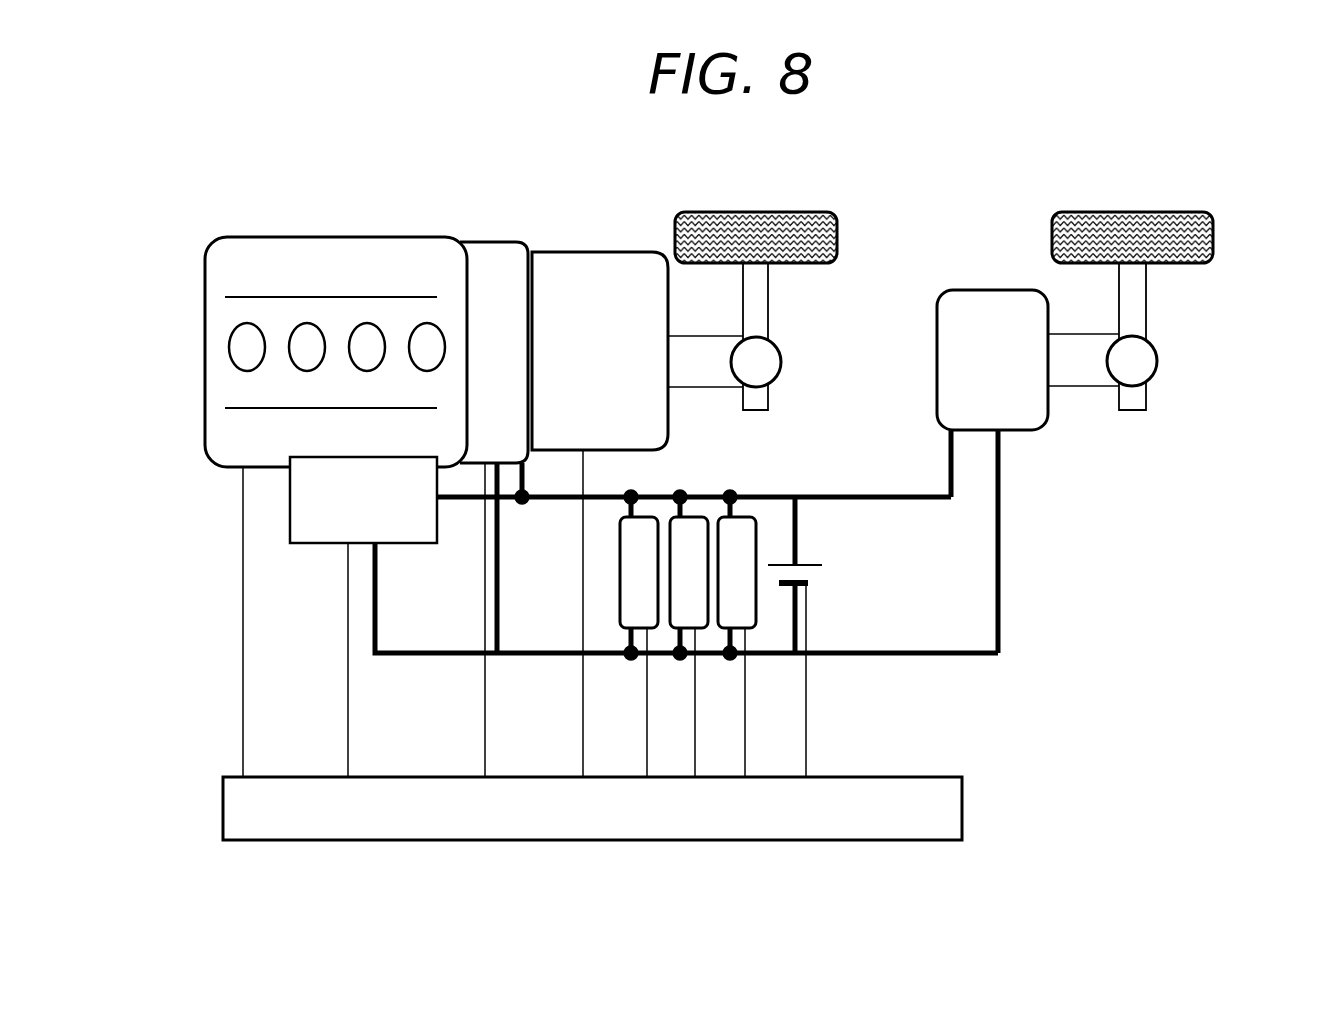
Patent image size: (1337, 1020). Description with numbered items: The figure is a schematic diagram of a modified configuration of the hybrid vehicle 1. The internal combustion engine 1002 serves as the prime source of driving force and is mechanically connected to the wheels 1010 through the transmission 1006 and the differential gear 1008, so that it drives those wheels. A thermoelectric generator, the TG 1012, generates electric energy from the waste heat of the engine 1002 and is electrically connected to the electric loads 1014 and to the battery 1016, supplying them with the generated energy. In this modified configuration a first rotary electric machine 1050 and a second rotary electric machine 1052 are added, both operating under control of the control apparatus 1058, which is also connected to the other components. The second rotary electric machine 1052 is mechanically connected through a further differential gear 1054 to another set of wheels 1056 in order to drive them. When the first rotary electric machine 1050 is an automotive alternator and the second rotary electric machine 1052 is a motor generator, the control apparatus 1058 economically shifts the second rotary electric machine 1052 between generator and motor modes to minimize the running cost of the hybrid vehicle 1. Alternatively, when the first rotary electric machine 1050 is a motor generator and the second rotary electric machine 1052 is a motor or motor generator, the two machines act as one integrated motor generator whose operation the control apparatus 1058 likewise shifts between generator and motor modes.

The hybrid vehicle 1 is at (942, 162).
The internal combustion engine 1002 is at (268, 237).
The transmission 1006 is at (590, 252).
The differential gear 1008 is at (781, 366).
The wheels 1010 is at (838, 229).
The thermoelectric generator (TG) 1012 is at (312, 545).
The electric loads 1014 is at (640, 516).
The battery 1016 is at (805, 560).
The first rotary electric machine 1050 is at (497, 242).
The second rotary electric machine 1052 is at (980, 290).
The differential gear 1054 is at (1158, 365).
The wheels 1056 is at (1214, 229).
The control apparatus 1058 is at (963, 802).